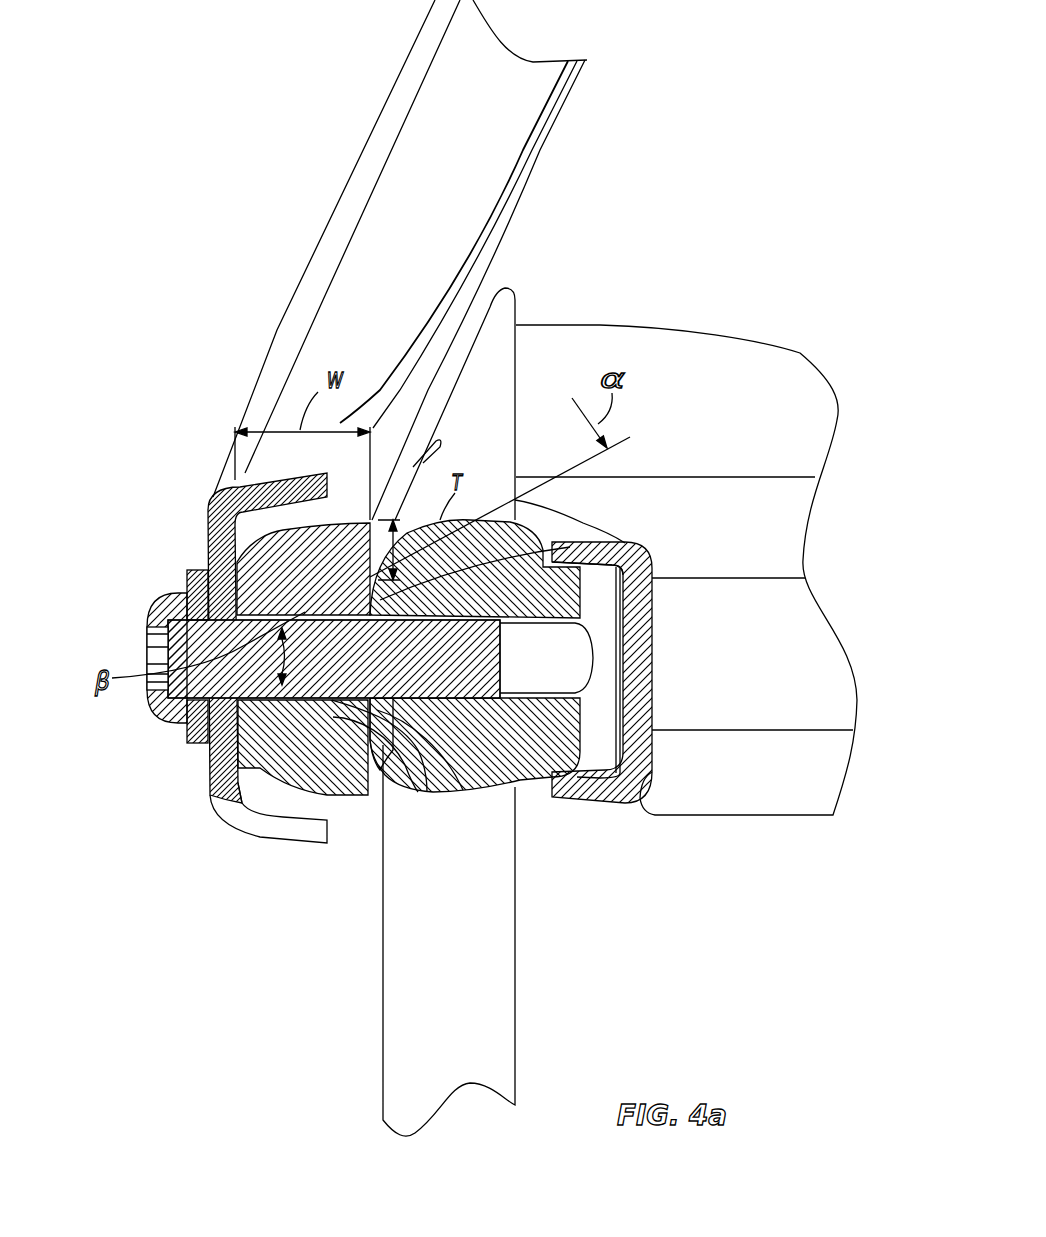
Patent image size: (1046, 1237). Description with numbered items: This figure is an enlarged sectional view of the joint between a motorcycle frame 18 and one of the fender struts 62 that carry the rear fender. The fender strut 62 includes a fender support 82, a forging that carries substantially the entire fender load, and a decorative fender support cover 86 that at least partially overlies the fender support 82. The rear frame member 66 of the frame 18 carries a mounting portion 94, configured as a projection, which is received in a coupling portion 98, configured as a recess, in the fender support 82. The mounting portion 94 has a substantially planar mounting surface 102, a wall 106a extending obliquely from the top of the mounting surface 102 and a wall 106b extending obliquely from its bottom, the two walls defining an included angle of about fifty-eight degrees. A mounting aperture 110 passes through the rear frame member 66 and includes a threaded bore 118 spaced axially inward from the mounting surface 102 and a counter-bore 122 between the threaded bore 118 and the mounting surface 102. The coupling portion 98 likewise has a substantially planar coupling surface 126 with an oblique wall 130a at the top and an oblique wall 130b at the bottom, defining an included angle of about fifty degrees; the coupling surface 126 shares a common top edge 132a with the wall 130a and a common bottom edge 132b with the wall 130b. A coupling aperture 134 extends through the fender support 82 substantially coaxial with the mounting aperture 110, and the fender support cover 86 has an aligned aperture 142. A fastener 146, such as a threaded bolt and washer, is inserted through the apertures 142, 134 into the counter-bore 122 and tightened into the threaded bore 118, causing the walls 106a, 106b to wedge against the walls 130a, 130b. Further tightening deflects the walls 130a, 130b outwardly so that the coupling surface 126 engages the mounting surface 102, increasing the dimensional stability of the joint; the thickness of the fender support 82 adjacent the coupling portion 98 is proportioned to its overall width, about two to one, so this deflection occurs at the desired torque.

The frame 18 is at (647, 772).
The fender strut 62 is at (350, 142).
The rear frame member 66 is at (497, 985).
The fender support 82 is at (263, 815).
The fender support cover 86 is at (297, 312).
The mounting portion 94 is at (380, 770).
The coupling portion 98 is at (647, 556).
The mounting surface 102 is at (207, 777).
The wall 106a is at (350, 597).
The wall 106b is at (273, 785).
The mounting aperture 110 is at (568, 667).
The threaded bore 118 is at (578, 648).
The counter-bore 122 is at (565, 690).
The coupling surface 126 is at (598, 562).
The wall 130a is at (400, 608).
The wall 130b is at (433, 795).
The top edge 132a is at (545, 572).
The bottom edge 132b is at (480, 790).
The coupling aperture 134 is at (240, 633).
The aperture 142 is at (298, 700).
The fastener 146 is at (147, 640).